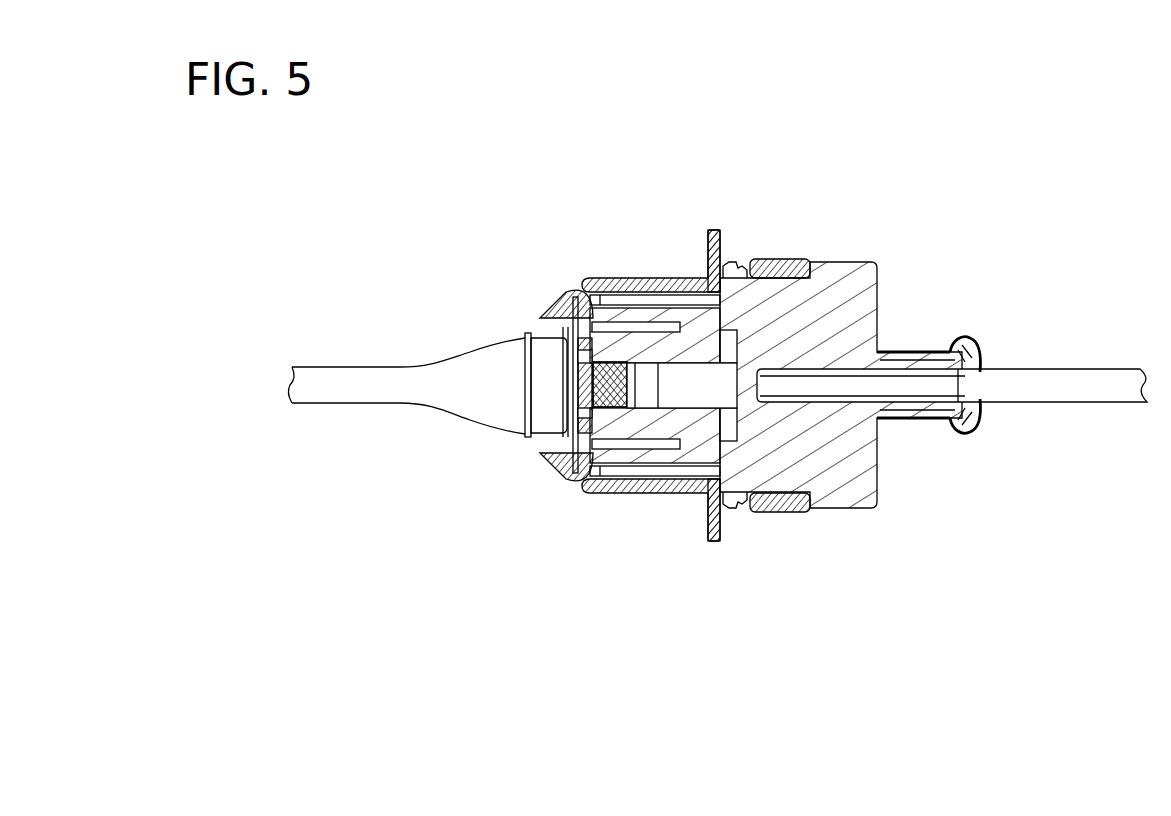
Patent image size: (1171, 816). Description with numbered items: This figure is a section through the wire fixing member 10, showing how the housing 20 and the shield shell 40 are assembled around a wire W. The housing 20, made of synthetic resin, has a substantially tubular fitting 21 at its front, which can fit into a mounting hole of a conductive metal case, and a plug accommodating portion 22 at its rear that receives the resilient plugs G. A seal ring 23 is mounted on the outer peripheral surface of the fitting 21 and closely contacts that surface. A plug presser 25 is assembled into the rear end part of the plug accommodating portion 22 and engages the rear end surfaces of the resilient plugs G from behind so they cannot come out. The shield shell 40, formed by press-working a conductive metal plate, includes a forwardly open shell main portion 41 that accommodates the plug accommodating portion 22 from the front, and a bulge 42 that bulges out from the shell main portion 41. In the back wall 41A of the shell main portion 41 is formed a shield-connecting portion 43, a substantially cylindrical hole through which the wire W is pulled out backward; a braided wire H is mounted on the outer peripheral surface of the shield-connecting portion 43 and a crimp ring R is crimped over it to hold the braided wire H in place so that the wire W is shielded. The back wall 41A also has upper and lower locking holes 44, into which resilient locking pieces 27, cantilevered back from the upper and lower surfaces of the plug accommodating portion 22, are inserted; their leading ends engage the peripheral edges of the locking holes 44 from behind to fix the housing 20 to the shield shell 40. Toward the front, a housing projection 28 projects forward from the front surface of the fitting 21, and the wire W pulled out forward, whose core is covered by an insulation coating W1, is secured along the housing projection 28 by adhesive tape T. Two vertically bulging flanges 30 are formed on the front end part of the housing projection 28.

The wire fixing member 10 is at (645, 174).
The housing 20 is at (845, 537).
The fitting 21 is at (850, 284).
The plug accommodating portion 22 is at (643, 345).
The seal ring 23 is at (792, 262).
The plug presser 25 is at (617, 405).
The resilient locking piece 27 is at (558, 305).
The housing projection 28 is at (937, 412).
The flange 30 is at (970, 340).
The shield shell 40 is at (633, 545).
The shell main portion 41 is at (678, 280).
The back wall 41A is at (577, 413).
The bulge 42 is at (718, 542).
The shield-connecting portion 43 is at (582, 412).
The locking hole 44 is at (573, 307).
The resilient plug G is at (650, 372).
The braided wire H is at (460, 350).
The crimp ring R is at (540, 350).
The adhesive tape T is at (915, 355).
The wire W is at (1063, 400).
The insulation coating W1 is at (1105, 378).